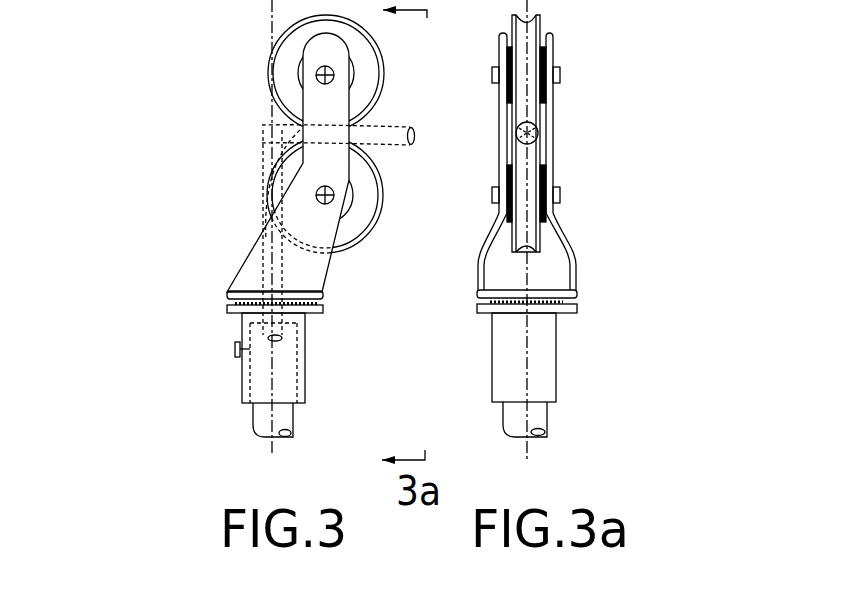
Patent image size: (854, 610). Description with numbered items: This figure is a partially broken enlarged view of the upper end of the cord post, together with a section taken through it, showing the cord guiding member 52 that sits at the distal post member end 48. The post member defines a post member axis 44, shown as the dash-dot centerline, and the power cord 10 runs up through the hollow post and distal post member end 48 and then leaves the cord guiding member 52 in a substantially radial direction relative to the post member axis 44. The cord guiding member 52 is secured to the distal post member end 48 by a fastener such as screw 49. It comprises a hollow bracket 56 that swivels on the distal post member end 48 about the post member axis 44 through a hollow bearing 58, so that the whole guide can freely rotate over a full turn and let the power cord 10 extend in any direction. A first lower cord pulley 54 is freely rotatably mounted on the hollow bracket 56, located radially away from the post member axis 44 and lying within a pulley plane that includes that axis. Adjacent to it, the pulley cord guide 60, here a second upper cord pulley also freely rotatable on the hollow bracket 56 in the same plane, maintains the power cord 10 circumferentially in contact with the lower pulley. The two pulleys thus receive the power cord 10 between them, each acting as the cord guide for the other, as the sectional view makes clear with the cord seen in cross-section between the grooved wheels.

In FIG. 3, the power cord 10 is at (395, 125).
In FIG. 3A, the power cord 10 is at (535, 128).
In FIG. 3, the post member axis 44 is at (272, 26).
In FIG. 3A, the post member axis 44 is at (529, 12).
In FIG. 3, the distal post member end 48 is at (297, 418).
In FIG. 3A, the distal post member end 48 is at (540, 418).
In FIG. 3, the screw 49 is at (235, 349).
In FIG. 3, the cord guiding member 52 is at (190, 136).
In FIG. 3A, the cord guiding member 52 is at (642, 183).
In FIG. 3, the first lower cord pulley 54 is at (368, 215).
In FIG. 3A, the first lower cord pulley 54 is at (512, 247).
In FIG. 3, the hollow bracket 56 is at (323, 272).
In FIG. 3A, the hollow bracket 56 is at (478, 266).
In FIG. 3, the hollow bearing 58 is at (210, 317).
In FIG. 3A, the hollow bearing 58 is at (460, 318).
In FIG. 3, the pulley cord guide 60 is at (372, 70).
In FIG. 3A, the pulley cord guide 60 is at (512, 20).